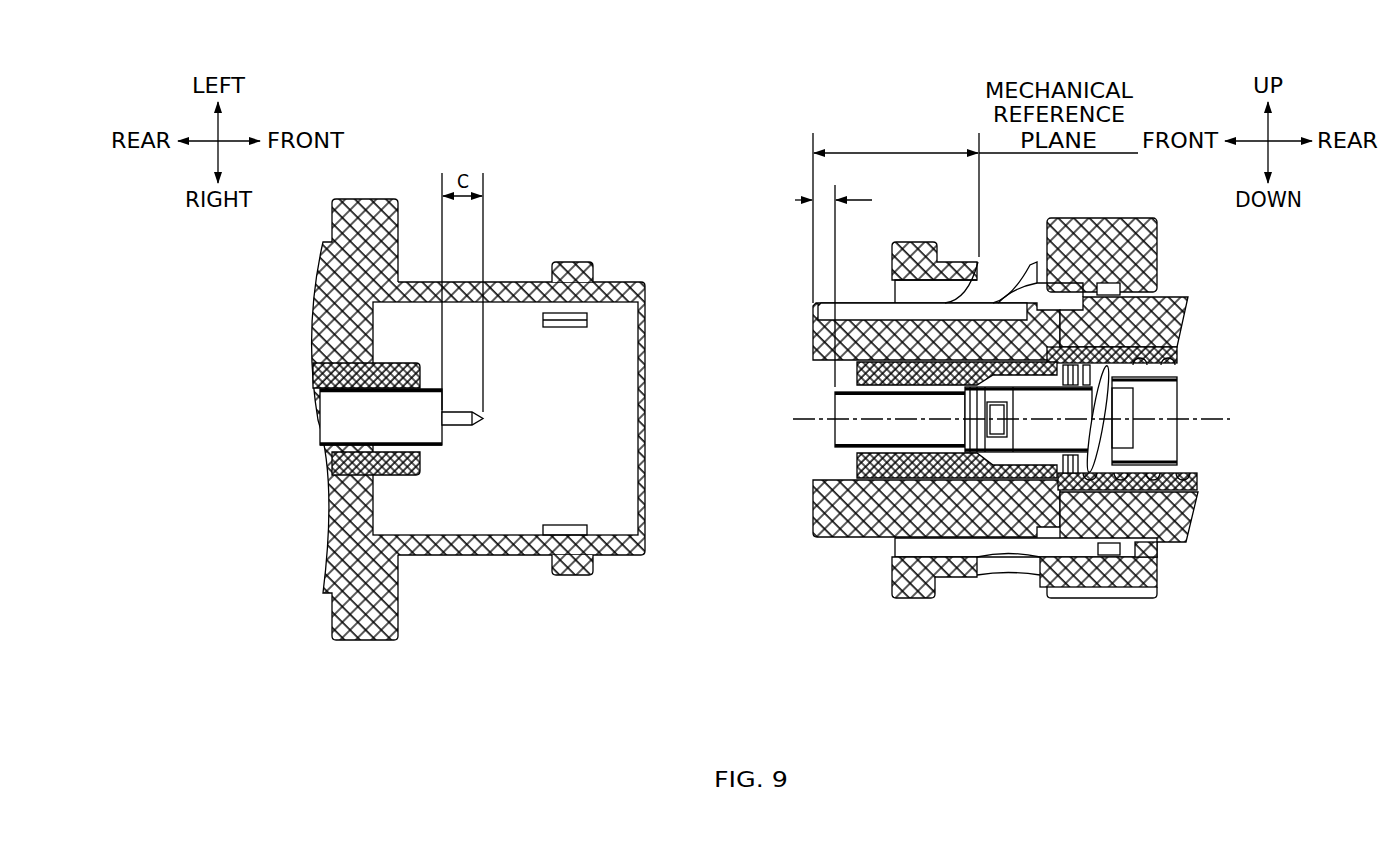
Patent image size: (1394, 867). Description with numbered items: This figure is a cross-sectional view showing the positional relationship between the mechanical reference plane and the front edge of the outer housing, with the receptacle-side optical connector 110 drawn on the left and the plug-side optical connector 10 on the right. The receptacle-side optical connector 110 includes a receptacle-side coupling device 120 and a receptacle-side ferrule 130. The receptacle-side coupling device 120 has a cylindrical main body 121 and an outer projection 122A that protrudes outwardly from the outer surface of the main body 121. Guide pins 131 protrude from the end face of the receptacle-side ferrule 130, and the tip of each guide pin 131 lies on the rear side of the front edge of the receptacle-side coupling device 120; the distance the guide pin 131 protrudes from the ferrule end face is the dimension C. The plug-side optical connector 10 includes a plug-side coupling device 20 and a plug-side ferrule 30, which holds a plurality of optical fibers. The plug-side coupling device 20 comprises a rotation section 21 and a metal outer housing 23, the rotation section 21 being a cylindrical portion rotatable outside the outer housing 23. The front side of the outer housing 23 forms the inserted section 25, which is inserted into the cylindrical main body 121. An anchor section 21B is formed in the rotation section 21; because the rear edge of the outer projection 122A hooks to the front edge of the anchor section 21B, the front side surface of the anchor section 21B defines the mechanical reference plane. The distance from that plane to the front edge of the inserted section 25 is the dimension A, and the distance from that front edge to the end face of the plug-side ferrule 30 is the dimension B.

The plug-side optical connector 10 is at (988, 419).
The plug-side coupling device 20 is at (1002, 449).
The rotation section 21 is at (913, 598).
The anchor section 21B is at (953, 302).
The outer housing 23 is at (850, 530).
The inserted section 25 is at (1004, 484).
The plug-side ferrule 30 is at (841, 434).
The receptacle-side optical connector 110 is at (350, 156).
The receptacle-side coupling device 120 is at (509, 370).
The cylindrical main body 121 is at (505, 548).
The outer projection 122A is at (572, 262).
The receptacle-side ferrule 130 is at (398, 510).
The guide pin 131 is at (462, 425).